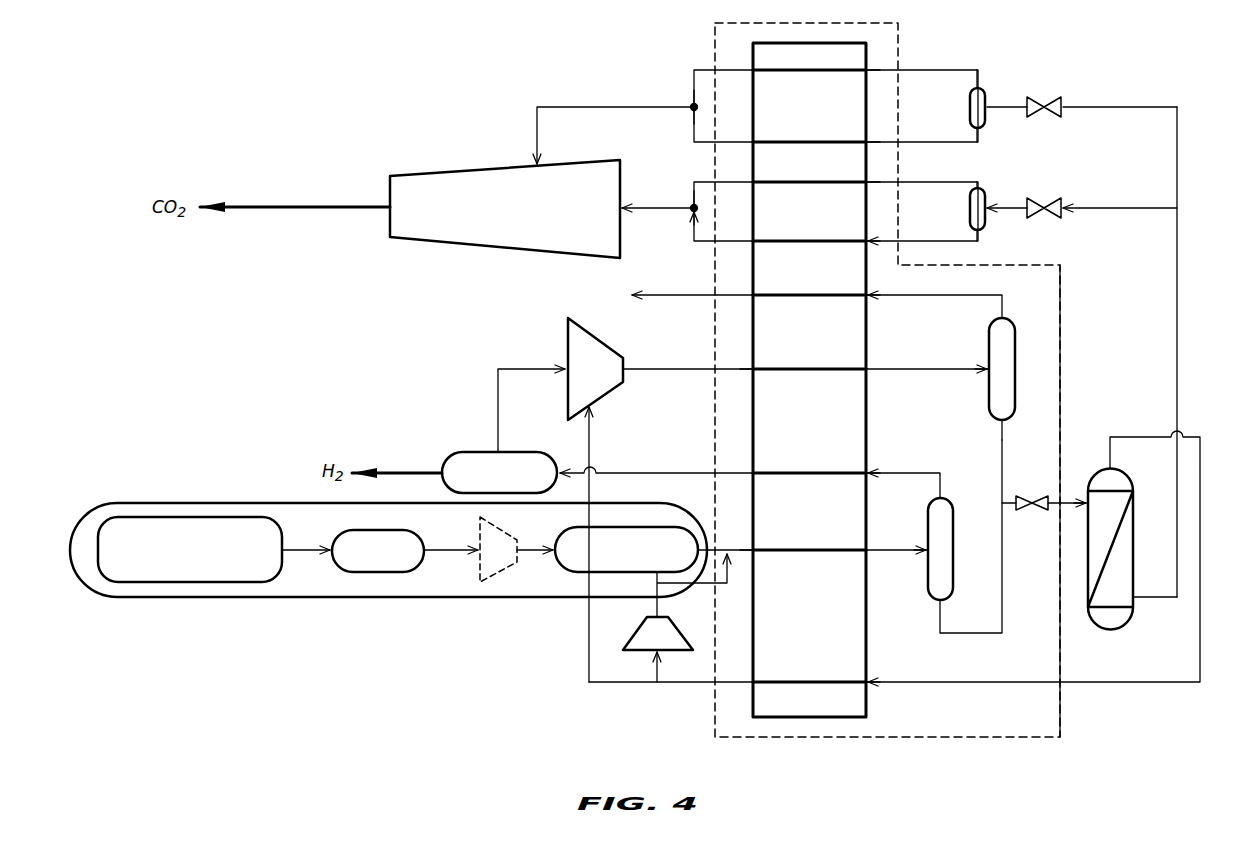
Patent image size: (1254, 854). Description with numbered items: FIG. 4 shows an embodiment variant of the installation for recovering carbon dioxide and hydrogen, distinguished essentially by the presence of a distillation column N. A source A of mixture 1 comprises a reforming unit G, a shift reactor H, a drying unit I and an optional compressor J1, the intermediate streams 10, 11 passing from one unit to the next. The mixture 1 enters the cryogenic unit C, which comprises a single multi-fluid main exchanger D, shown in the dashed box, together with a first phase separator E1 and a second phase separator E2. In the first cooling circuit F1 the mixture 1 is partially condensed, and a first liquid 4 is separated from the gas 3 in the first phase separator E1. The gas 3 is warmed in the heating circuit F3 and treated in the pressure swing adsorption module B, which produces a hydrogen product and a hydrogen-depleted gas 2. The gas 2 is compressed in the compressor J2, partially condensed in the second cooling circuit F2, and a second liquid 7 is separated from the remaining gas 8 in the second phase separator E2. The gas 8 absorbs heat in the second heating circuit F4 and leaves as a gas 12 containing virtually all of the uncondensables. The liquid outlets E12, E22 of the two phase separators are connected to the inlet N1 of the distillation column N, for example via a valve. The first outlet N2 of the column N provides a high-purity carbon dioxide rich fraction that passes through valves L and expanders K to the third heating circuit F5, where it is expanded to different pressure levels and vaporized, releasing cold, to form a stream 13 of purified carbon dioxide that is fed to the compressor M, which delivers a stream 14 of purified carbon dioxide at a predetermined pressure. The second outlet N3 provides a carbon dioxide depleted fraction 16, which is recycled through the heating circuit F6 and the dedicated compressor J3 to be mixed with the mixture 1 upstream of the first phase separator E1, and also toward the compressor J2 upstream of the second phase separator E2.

The source of mixture A is at (131, 601).
The pressure swing adsorption module for hydrogen B is at (499, 472).
The cryogenic unit C is at (1063, 366).
The main exchanger D is at (802, 722).
The reforming unit G is at (190, 549).
The shift reactor H is at (378, 551).
The drying unit I is at (626, 549).
The compressor J1 is at (498, 549).
The compressor J2 is at (595, 369).
The dedicated compressor J3 is at (658, 633).
The expander K is at (982, 88).
The valve L is at (1046, 98).
The compressor M is at (505, 209).
The distillation column N is at (1110, 549).
The inlet of distillation column N1 is at (1086, 500).
The first outlet of distillation column N2 is at (1133, 600).
The second outlet of distillation column N3 is at (1110, 470).
The first phase separator E1 is at (937, 570).
The outlet of first phase separator E12 is at (940, 603).
The second phase separator E2 is at (1003, 338).
The outlet of second phase separator E22 is at (993, 421).
The first cooling circuit F1 is at (831, 545).
The second cooling circuit F2 is at (836, 365).
The heating circuit F3 is at (787, 469).
The second heating circuit F4 is at (836, 291).
The third heating circuit F5 is at (836, 76).
The heating circuit F6 is at (831, 677).
The mixture 1 is at (724, 546).
The hydrogen-depleted gas 2 is at (494, 390).
The gas 3 is at (889, 470).
The first liquid 4 is at (961, 638).
The second liquid 7 is at (1006, 476).
The remaining gas 8 is at (938, 302).
The reformed gas stream 10 is at (293, 555).
The shifted gas stream 11 is at (434, 557).
The gas containing uncondensables 12 is at (696, 290).
The stream of purified CO2 13 is at (635, 105).
The stream of purified CO2 at predetermined pressure 14 is at (282, 212).
The CO2-depleted fraction 16 is at (1108, 686).